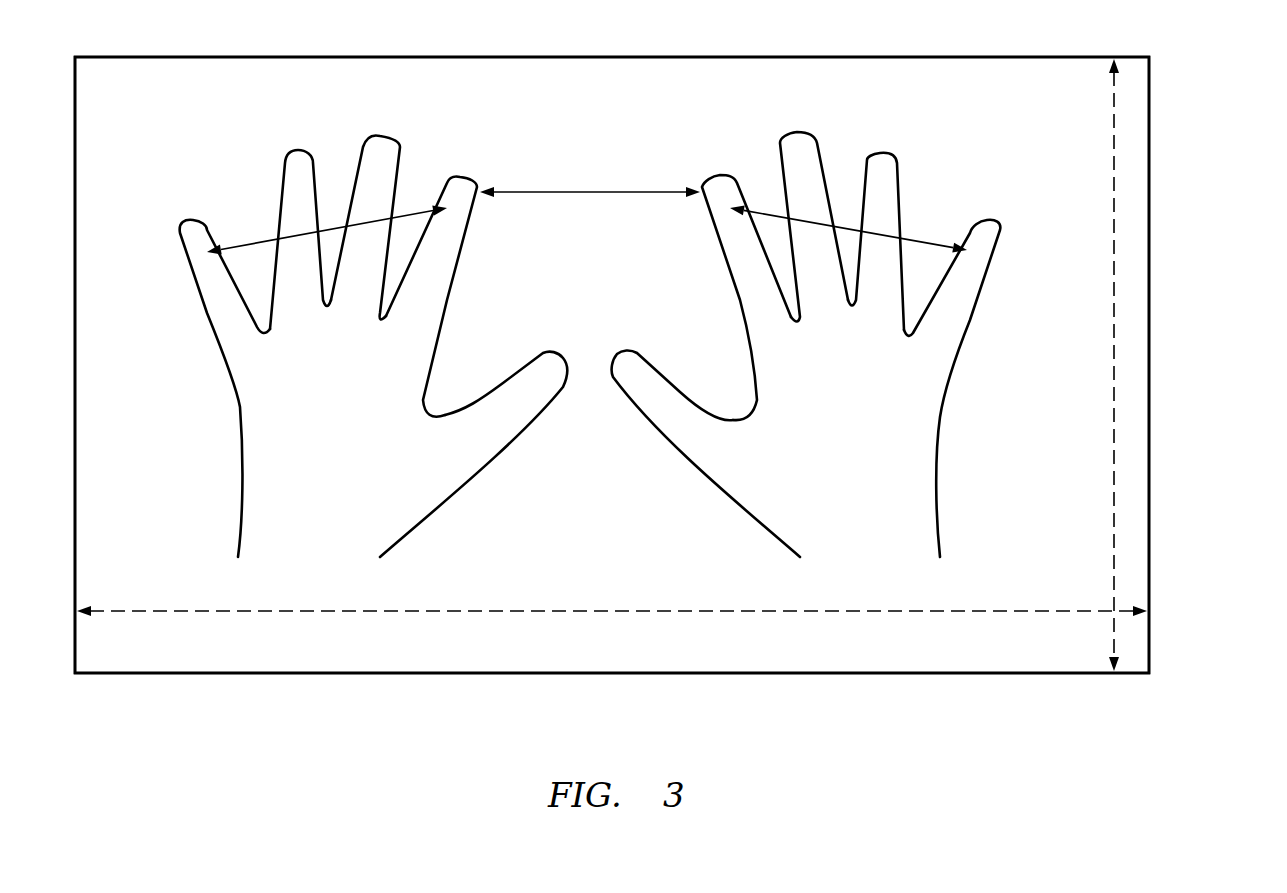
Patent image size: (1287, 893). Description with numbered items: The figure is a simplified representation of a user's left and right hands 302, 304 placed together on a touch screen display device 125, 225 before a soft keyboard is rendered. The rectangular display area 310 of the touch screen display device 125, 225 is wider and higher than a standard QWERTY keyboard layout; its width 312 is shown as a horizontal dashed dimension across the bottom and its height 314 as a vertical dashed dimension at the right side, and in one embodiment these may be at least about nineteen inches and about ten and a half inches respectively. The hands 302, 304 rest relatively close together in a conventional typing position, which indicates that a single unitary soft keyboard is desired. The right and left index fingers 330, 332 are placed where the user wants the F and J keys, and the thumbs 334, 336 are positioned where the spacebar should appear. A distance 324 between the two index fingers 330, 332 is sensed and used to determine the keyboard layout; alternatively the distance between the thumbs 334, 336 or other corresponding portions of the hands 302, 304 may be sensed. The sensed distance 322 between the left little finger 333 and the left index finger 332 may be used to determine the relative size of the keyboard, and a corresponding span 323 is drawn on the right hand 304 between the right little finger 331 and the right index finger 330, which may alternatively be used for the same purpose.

The display area 310 is at (663, 115).
The touch screen display device 125 is at (1152, 107).
The touch screen display device 225 is at (1152, 107).
The width of display area 312 is at (533, 610).
The height of display area 314 is at (1113, 363).
The distance between index fingers 324 is at (577, 192).
The left hand 302 is at (335, 324).
The right hand 304 is at (822, 329).
The sensed distance between left little finger and left index finger 322 is at (328, 217).
The right hand finger span 323 is at (843, 222).
The right index finger 330 is at (715, 178).
The right little finger 331 is at (990, 225).
The left index finger 332 is at (460, 182).
The left little finger 333 is at (185, 233).
The thumb 334 is at (625, 363).
The thumb 336 is at (552, 360).